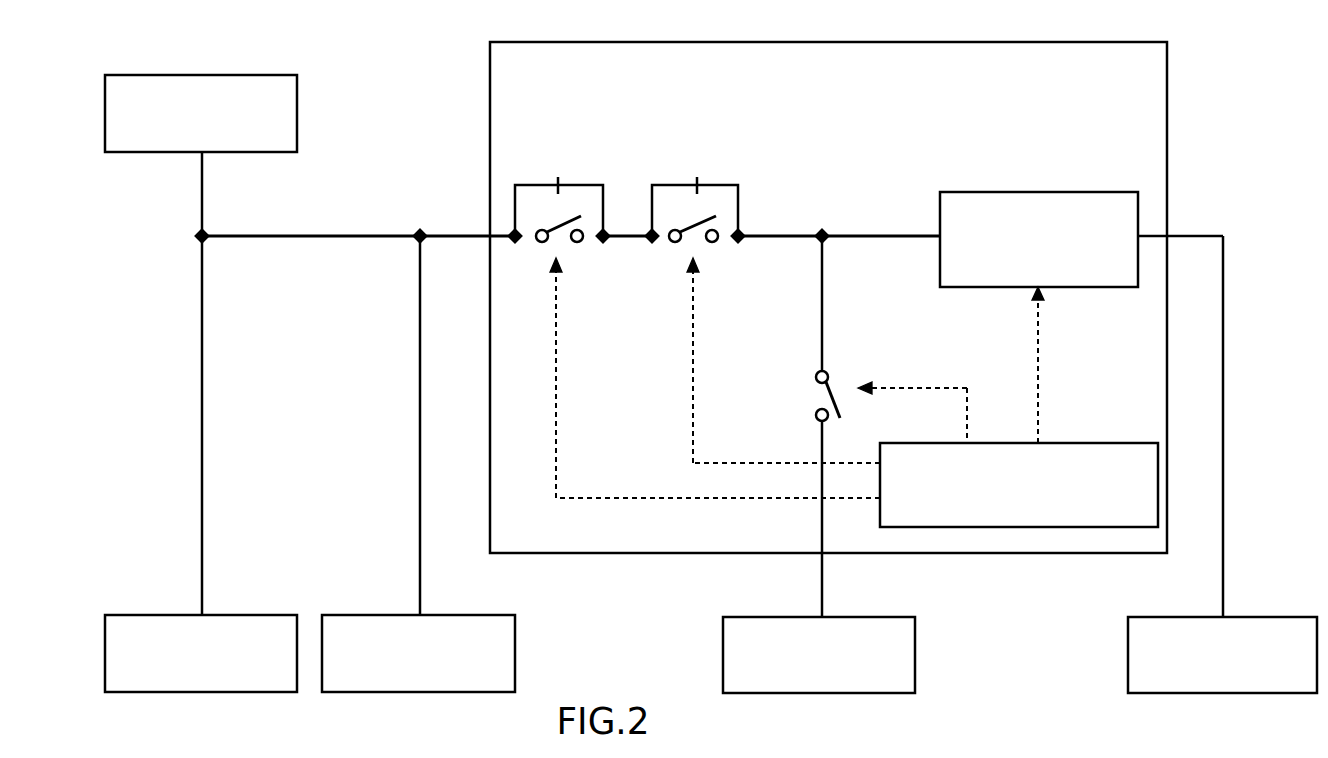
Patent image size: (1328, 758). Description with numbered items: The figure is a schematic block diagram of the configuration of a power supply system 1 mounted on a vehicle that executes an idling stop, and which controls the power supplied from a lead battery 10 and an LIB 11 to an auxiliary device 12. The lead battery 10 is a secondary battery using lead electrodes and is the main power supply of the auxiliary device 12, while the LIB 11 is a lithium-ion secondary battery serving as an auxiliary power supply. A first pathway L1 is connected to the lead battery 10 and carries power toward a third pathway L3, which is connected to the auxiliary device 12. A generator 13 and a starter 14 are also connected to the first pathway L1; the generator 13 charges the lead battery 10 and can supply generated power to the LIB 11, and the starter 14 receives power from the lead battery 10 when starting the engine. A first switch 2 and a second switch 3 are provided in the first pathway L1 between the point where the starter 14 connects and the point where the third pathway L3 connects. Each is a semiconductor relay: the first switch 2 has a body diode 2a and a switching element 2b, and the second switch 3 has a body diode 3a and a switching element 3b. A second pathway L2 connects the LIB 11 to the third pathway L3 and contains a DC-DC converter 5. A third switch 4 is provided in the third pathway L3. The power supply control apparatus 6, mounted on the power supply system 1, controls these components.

The power supply system 1 is at (1108, 42).
The first switch 2 is at (578, 156).
The body diode 2a is at (556, 170).
The switching element 2b is at (571, 252).
The second switch 3 is at (713, 156).
The body diode 3a is at (695, 170).
The switching element 3b is at (707, 252).
The third switch 4 is at (805, 392).
The DC-DC converter 5 is at (1080, 192).
The power supply control apparatus 6 is at (1080, 443).
The lead battery 10 is at (243, 615).
The LIB 11 is at (1263, 617).
The auxiliary device 12 is at (861, 617).
The generator 13 is at (243, 75).
The starter 14 is at (461, 615).
The first pathway L1 is at (368, 232).
The second pathway L2 is at (903, 232).
The third pathway L3 is at (824, 318).